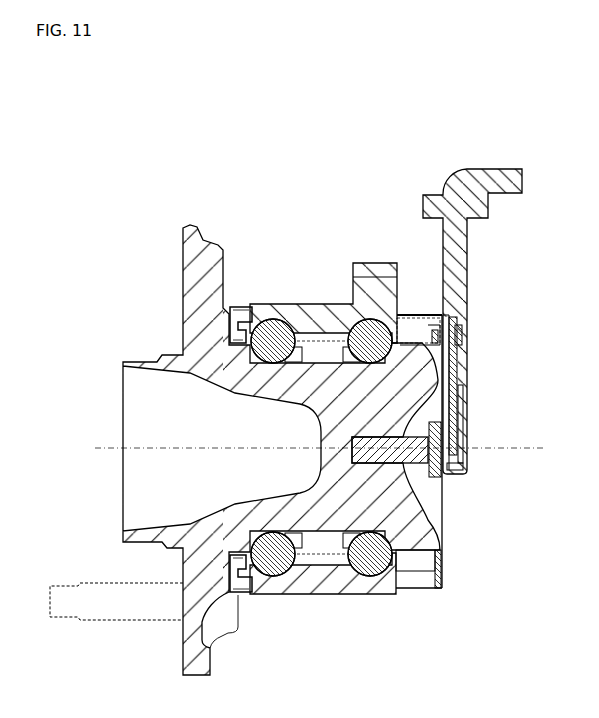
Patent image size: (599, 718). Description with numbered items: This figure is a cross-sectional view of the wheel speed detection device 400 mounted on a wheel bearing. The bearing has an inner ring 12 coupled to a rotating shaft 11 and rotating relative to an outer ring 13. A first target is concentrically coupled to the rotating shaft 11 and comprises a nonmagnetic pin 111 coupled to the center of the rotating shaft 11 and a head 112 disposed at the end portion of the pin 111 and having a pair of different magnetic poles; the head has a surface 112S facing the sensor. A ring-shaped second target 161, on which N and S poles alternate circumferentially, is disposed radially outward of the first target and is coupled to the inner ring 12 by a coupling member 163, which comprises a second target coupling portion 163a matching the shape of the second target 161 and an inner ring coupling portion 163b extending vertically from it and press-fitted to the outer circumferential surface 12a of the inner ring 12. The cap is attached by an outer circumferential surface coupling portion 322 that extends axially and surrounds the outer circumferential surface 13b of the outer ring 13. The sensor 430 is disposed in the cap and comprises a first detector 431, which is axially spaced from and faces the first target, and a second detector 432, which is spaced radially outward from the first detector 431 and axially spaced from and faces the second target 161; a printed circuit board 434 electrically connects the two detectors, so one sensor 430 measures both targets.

The wheel speed detection device 400 is at (216, 140).
The rotating shaft 11 is at (313, 523).
The pin 111 is at (443, 522).
The head 112 is at (442, 491).
The hub shaft surface 112S is at (444, 422).
The inner ring 12 is at (323, 303).
The outer circumferential surface 12a is at (355, 290).
The outer ring 13 is at (290, 312).
The outer circumferential surface 13b is at (435, 588).
The outer circumferential surface coupling portion 322 is at (410, 588).
The second target 161 is at (446, 317).
The coupling member 163 is at (413, 140).
The second target coupling portion 163a is at (420, 318).
The inner ring coupling portion 163b is at (390, 322).
The sensor 430 is at (480, 241).
The first detector 431 is at (464, 465).
The second detector 432 is at (460, 335).
The printed circuit board 434 is at (460, 363).